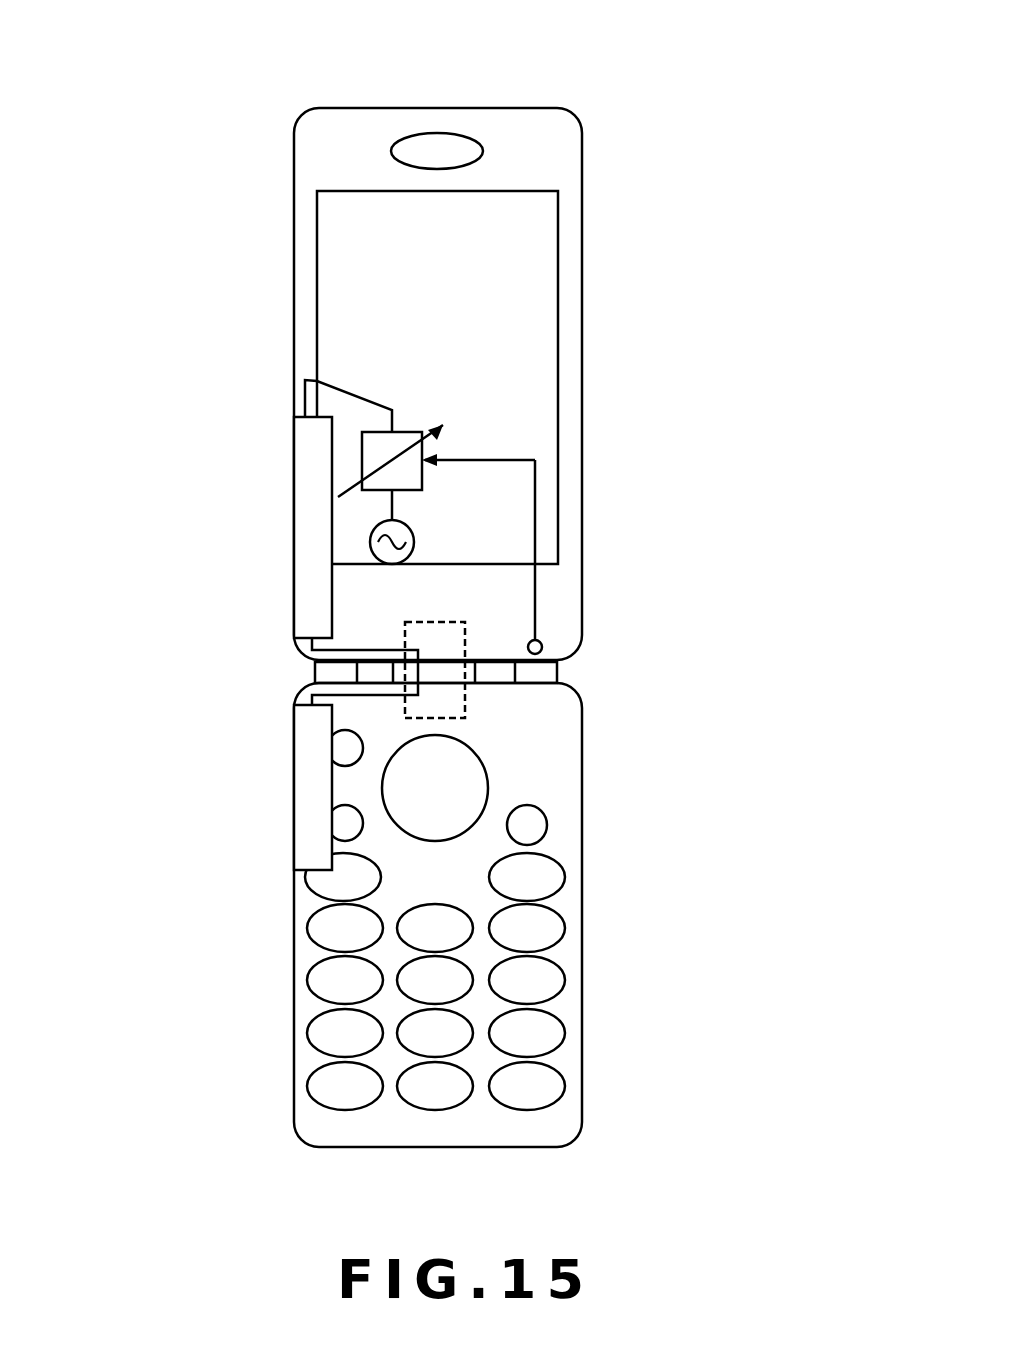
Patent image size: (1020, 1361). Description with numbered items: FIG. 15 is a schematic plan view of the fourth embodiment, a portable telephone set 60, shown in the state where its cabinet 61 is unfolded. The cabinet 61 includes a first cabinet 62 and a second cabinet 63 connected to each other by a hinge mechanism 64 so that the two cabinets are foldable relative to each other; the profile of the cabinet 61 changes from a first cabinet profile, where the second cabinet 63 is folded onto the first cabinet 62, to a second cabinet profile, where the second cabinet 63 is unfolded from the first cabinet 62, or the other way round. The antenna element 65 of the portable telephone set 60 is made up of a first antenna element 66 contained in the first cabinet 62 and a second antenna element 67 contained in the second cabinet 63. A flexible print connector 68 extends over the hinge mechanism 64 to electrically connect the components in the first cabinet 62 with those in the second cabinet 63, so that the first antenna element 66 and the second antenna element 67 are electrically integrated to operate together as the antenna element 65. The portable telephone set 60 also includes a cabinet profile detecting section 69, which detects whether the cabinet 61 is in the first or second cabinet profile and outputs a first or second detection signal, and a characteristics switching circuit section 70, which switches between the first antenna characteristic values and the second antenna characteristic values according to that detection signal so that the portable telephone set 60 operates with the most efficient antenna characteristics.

The portable telephone set 60 is at (470, 33).
The cabinet 61 is at (727, 483).
The first cabinet 62 is at (582, 503).
The second cabinet 63 is at (582, 798).
The hinge mechanism 64 is at (543, 668).
The antenna element 65 is at (170, 558).
The first antenna element 66 is at (300, 577).
The second antenna element 67 is at (305, 725).
The flexible print connector 68 is at (433, 622).
The cabinet profile detecting section 69 is at (542, 647).
The characteristics switching circuit section 70 is at (410, 432).